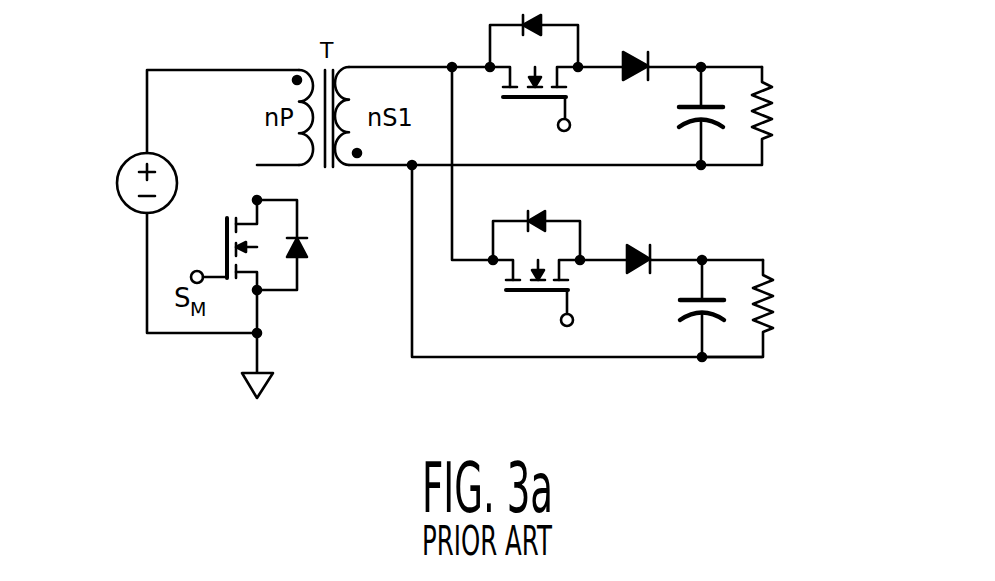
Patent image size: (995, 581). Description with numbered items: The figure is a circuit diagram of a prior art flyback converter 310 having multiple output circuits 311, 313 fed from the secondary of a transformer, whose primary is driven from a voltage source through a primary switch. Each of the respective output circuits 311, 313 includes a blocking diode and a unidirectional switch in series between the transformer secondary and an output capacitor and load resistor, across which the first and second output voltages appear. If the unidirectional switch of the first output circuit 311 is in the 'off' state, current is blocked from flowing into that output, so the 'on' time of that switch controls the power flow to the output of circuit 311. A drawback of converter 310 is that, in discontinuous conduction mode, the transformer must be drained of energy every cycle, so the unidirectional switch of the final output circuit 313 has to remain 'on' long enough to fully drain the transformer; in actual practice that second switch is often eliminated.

The flyback converter 310 is at (108, 142).
The output circuit 311 is at (815, 95).
The output circuit 313 is at (817, 290).